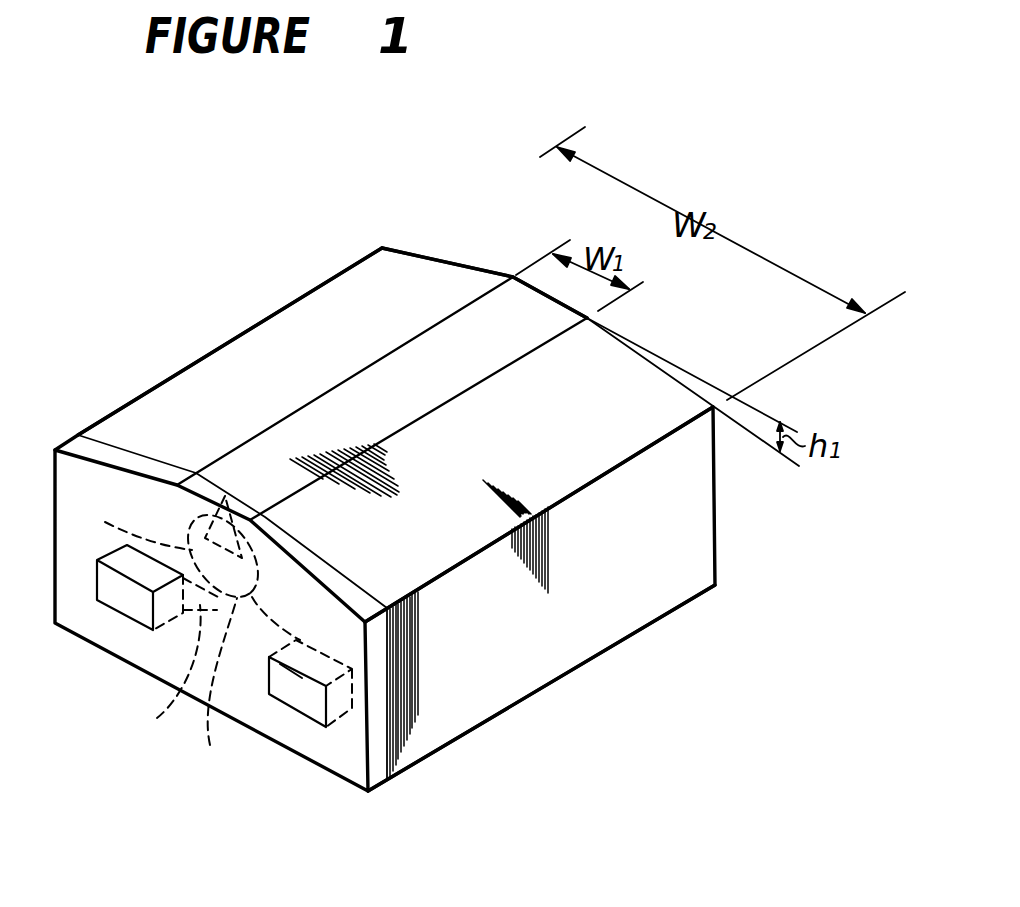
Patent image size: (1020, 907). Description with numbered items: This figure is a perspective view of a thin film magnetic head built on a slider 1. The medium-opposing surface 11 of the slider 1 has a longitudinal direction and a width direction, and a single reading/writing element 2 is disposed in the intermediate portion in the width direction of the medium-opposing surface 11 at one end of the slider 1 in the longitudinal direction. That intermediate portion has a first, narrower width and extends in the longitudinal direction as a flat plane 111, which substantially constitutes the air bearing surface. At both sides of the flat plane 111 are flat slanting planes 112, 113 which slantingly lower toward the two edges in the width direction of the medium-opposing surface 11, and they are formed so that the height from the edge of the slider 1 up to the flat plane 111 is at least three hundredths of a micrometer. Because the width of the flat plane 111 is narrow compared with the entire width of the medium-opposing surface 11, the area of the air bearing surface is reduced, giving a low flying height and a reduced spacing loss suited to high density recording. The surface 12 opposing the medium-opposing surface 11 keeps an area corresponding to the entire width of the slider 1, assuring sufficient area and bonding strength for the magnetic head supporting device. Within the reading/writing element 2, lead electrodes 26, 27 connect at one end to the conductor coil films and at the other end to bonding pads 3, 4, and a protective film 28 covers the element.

The slider 1 is at (688, 550).
The reading/writing element 2 is at (105, 522).
The bonding pad 3 is at (132, 603).
The bonding pad 4 is at (300, 692).
The medium-opposing surface 11 is at (238, 400).
The surface opposing the medium-opposing surface 12 is at (666, 618).
The lead electrode 26 is at (166, 680).
The lead electrode 27 is at (210, 689).
The protective film 28 is at (380, 757).
The flat plane 111 is at (477, 343).
The slanting plane 112 is at (343, 327).
The slanting plane 113 is at (602, 423).